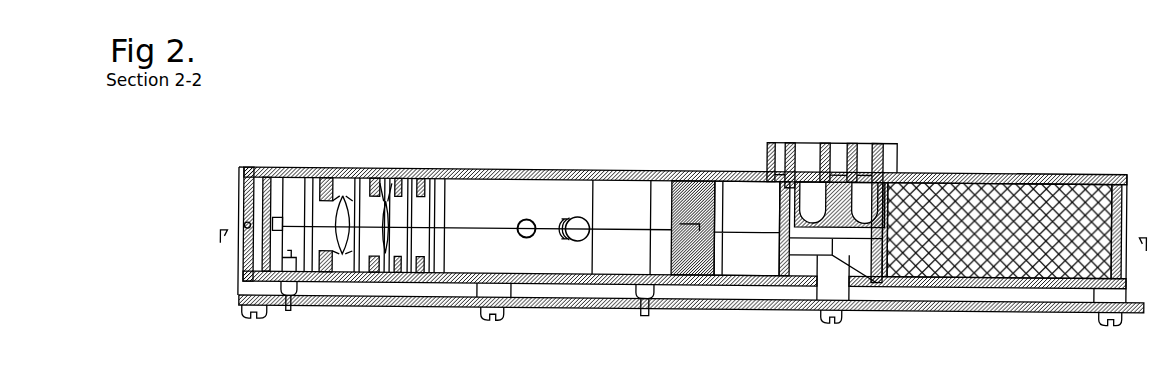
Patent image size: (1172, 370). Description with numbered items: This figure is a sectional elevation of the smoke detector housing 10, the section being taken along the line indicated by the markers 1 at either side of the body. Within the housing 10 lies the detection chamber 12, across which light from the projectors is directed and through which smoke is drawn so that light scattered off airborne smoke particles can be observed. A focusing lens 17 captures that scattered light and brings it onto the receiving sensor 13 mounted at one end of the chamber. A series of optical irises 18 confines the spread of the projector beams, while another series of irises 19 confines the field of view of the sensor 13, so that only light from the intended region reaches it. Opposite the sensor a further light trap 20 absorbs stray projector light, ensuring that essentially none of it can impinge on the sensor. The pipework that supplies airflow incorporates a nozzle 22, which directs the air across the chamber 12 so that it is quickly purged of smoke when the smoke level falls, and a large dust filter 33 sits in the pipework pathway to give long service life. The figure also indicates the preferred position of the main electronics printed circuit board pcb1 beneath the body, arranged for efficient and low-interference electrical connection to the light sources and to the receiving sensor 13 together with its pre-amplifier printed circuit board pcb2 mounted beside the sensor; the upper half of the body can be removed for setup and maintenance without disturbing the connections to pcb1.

The section line indicator 1 is at (681, 252).
The smoke detector housing 10 is at (562, 144).
The detection chamber 12 is at (492, 217).
The sensor 13 is at (278, 217).
The focusing lens 17 is at (328, 190).
The optical irises 18 is at (583, 210).
The irises 19 is at (388, 190).
The light trap 20 is at (759, 257).
The nozzle 22 is at (523, 216).
The dust filter 33 is at (997, 208).
The main electronics printed circuit board pcb1 is at (712, 306).
The pre-amplifier printed circuit board pcb2 is at (262, 185).